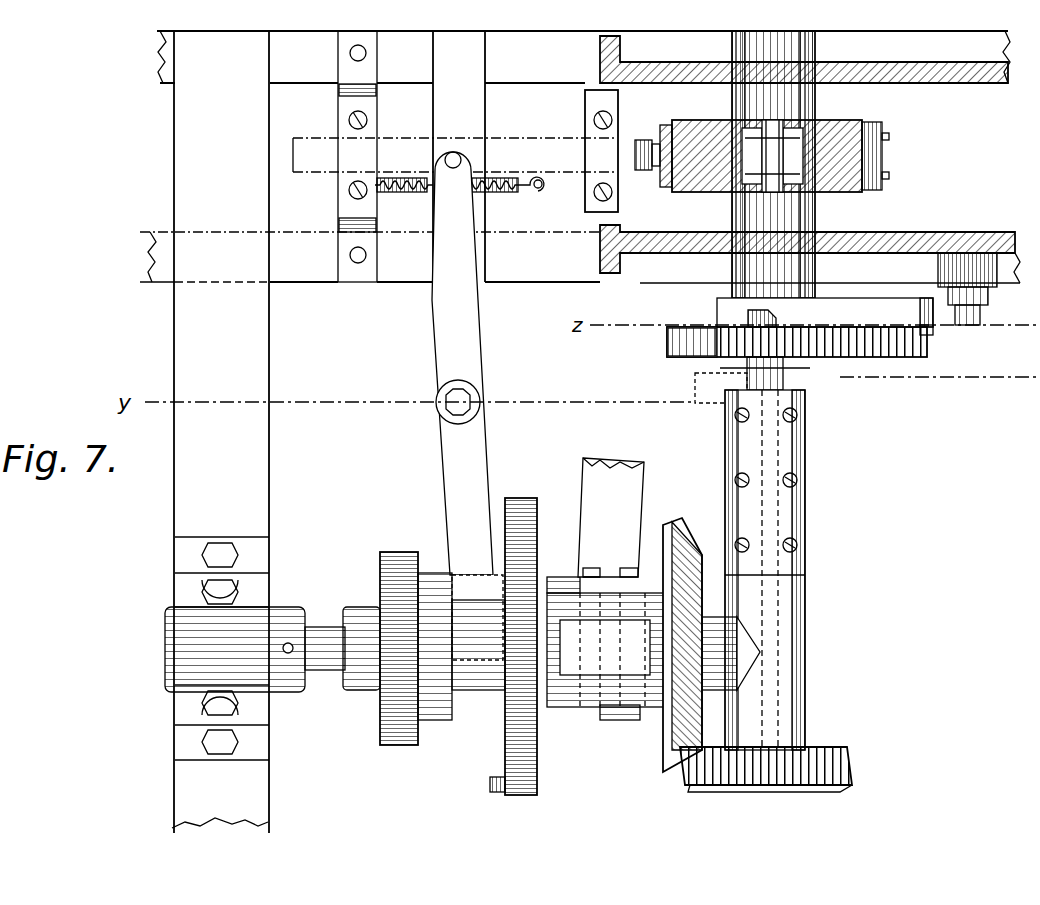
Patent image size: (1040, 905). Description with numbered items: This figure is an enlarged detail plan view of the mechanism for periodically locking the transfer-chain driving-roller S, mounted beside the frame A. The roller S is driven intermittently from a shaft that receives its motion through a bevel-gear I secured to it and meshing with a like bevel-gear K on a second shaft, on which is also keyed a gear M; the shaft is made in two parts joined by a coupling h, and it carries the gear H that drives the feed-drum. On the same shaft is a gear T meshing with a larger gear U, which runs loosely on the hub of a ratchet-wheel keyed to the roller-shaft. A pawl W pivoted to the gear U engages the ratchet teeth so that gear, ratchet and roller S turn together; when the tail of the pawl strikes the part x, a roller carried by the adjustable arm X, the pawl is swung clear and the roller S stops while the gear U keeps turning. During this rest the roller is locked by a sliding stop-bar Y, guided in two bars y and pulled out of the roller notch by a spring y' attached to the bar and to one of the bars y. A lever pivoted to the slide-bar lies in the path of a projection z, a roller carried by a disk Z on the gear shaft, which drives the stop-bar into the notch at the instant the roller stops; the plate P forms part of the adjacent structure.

The frame A is at (220, 432).
The sliding stop-bar Y is at (508, 145).
The bars y is at (478, 156).
The spring y' is at (459, 202).
The roller S is at (850, 128).
The pawl W is at (826, 322).
The arm X is at (900, 286).
The part x is at (928, 332).
The gear H is at (747, 388).
The gear T is at (834, 366).
The gear U is at (902, 358).
The coupling h is at (806, 470).
The gear M is at (382, 572).
The disk Z is at (536, 556).
The projection z is at (488, 785).
The plate P is at (611, 517).
The bevel-gear K is at (672, 740).
The bevel-gear I is at (818, 748).